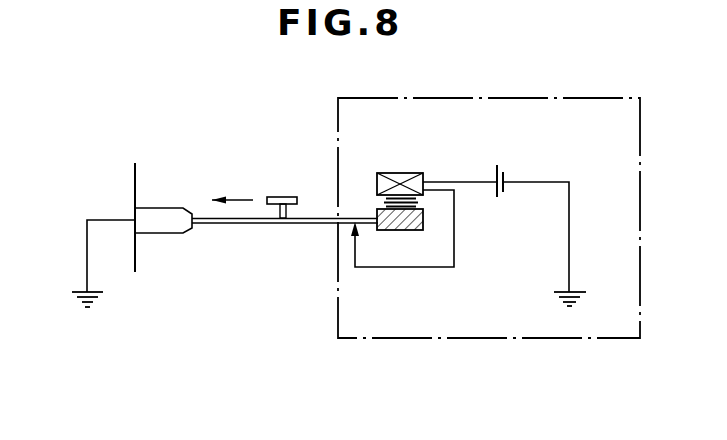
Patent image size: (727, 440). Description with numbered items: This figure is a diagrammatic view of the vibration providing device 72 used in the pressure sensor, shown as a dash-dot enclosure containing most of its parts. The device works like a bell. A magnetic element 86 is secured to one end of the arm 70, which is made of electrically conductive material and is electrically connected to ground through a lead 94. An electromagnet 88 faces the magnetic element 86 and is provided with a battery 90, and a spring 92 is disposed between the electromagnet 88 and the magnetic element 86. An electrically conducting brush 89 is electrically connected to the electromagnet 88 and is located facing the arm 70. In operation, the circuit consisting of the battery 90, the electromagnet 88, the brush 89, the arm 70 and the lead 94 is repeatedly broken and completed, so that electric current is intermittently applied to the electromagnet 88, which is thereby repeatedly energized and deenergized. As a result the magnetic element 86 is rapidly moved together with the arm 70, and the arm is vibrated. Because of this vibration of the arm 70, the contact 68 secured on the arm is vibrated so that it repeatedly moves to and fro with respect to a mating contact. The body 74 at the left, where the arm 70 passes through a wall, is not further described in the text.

The contact 68 is at (282, 197).
The arm 70 is at (308, 224).
The vibration providing device 72 is at (500, 90).
The sensor body 74 is at (170, 235).
The magnetic element 86 is at (415, 220).
The electromagnet 88 is at (398, 182).
The brush 89 is at (362, 232).
The battery 90 is at (500, 165).
The spring 92 is at (385, 202).
The lead 94 is at (86, 258).